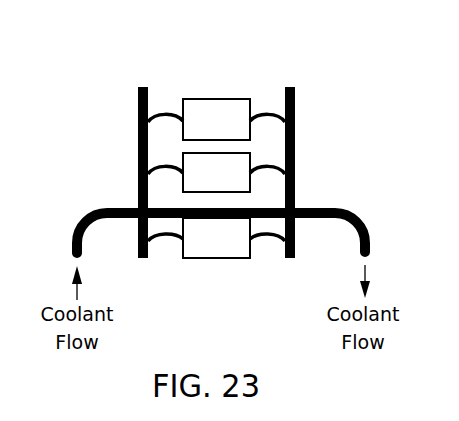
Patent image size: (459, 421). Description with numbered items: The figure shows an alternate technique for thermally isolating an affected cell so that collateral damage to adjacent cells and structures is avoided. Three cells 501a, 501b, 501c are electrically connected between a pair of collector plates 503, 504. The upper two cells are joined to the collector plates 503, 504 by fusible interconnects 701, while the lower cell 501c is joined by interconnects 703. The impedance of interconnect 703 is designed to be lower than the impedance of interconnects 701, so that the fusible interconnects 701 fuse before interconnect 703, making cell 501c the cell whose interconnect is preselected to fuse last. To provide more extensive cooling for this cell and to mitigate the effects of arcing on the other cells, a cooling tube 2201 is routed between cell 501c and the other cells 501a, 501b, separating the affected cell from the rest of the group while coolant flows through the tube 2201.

The cell 501a is at (225, 98).
The cell 501b is at (243, 160).
The cell 501c is at (197, 258).
The collector plate 503 is at (138, 118).
The collector plate 504 is at (295, 120).
The fusible interconnect 701 is at (161, 112).
The interconnect 703 is at (166, 244).
The cooling tube 2201 is at (185, 208).